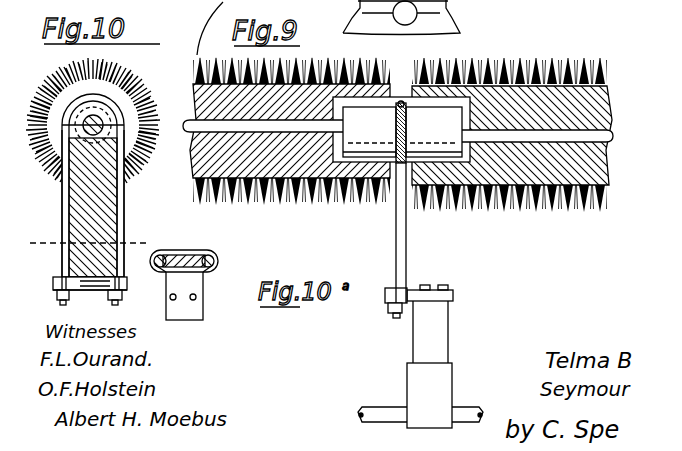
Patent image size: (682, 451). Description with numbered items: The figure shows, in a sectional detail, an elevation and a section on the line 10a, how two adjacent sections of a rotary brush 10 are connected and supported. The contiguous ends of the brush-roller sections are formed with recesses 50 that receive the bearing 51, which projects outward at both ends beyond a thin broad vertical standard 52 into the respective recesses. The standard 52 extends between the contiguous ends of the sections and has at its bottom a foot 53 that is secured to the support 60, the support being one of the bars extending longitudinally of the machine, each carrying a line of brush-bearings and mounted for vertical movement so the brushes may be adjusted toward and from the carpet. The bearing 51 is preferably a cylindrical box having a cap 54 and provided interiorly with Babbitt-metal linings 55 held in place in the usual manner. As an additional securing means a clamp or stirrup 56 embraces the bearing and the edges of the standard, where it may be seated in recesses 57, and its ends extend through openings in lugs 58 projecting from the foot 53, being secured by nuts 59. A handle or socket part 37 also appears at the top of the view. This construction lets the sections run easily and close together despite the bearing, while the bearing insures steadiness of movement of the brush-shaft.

In FIG. 10, the rotary brush 10 is at (103, 125).
In FIG. 9, the rotary brush 10 is at (607, 107).
In FIG. 10, the section line 10a is at (101, 242).
In FIG. 9, the handle socket 37 is at (443, 27).
In FIG. 9, the recess 50 is at (497, 67).
In FIG. 10, the bearing 51 is at (117, 123).
In FIG. 9, the bearing 51 is at (434, 132).
In FIG. 10, the standard 52 is at (126, 207).
In FIG. 10A, the standard 52 is at (189, 257).
In FIG. 10, the foot 53 is at (89, 289).
In FIG. 10A, the foot 53 is at (183, 307).
In FIG. 9, the foot 53 is at (445, 283).
In FIG. 10, the cap 54 is at (82, 118).
In FIG. 9, the cap 54 is at (369, 132).
In FIG. 10, the Babbitt-metal lining 55 is at (94, 114).
In FIG. 9, the Babbitt-metal lining 55 is at (398, 131).
In FIG. 10, the clamp or stirrup 56 is at (63, 206).
In FIG. 9, the clamp or stirrup 56 is at (402, 229).
In FIG. 10, the recess 57 is at (70, 232).
In FIG. 10A, the recess 57 is at (219, 257).
In FIG. 10, the lug 58 is at (55, 285).
In FIG. 10A, the lug 58 is at (216, 270).
In FIG. 9, the lug 58 is at (385, 294).
In FIG. 10, the nut 59 is at (114, 304).
In FIG. 9, the nut 59 is at (390, 316).
In FIG. 9, the support 60 is at (438, 338).